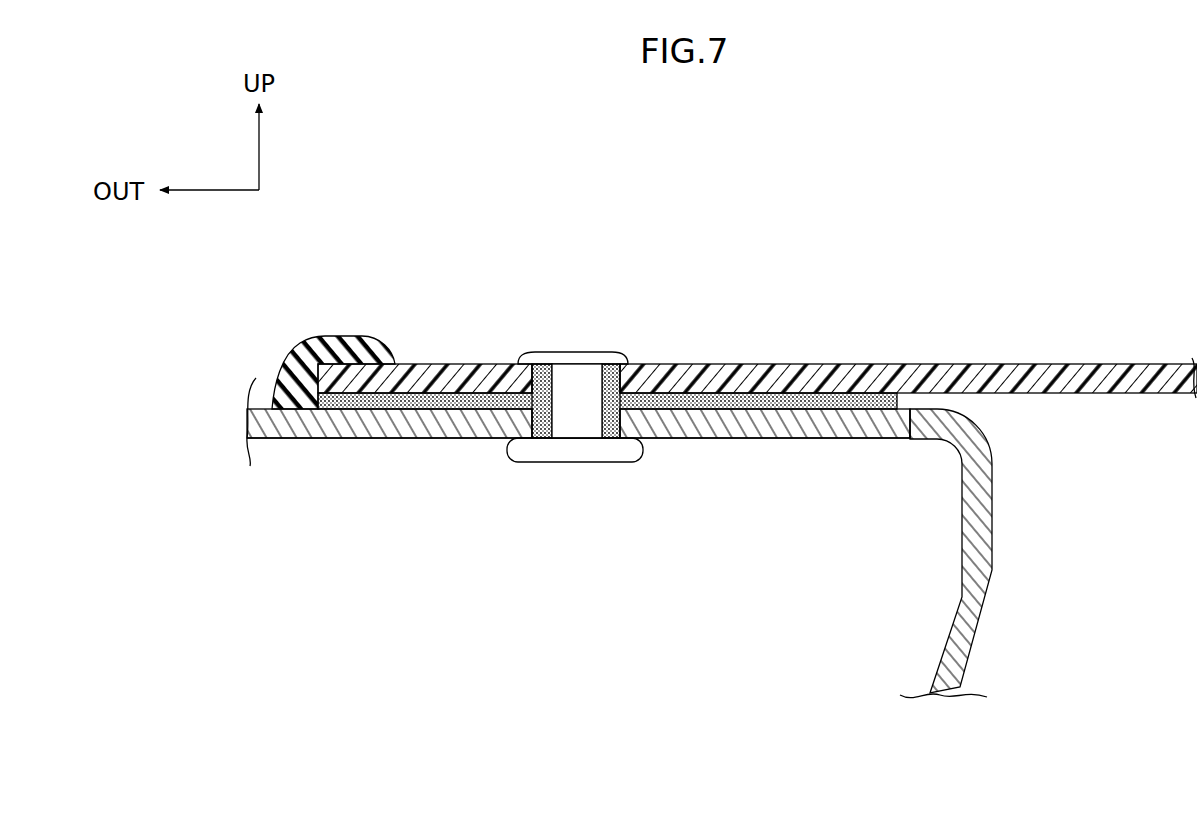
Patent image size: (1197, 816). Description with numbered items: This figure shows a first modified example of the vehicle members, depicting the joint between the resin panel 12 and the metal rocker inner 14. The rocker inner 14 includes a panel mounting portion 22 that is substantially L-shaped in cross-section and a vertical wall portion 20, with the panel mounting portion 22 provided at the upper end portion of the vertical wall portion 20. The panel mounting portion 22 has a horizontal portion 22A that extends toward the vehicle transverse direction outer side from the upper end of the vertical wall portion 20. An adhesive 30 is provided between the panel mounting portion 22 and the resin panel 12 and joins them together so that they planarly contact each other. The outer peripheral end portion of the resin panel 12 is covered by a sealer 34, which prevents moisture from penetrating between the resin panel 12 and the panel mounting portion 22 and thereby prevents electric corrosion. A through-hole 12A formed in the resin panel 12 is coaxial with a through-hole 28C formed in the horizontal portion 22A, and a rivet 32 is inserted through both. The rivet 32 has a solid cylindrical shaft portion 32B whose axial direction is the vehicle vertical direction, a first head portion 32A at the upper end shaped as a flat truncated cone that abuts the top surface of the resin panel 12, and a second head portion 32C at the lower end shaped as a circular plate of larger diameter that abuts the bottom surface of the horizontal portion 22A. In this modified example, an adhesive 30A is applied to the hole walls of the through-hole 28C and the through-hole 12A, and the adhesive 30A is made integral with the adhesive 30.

The resin panel 12 is at (1068, 360).
The through-hole 12A is at (533, 353).
The rocker inner 14 is at (1024, 553).
The vertical wall portion 20 is at (992, 570).
The panel mounting portion 22 is at (298, 444).
The horizontal portion 22A is at (398, 440).
The through-hole 28C is at (548, 440).
The adhesive 30 is at (903, 440).
The adhesive 30A is at (620, 350).
The rivet 32 is at (562, 386).
The first head portion 32A is at (547, 348).
The shaft portion 32B is at (607, 357).
The second head portion 32C is at (587, 463).
The sealer 34 is at (325, 335).